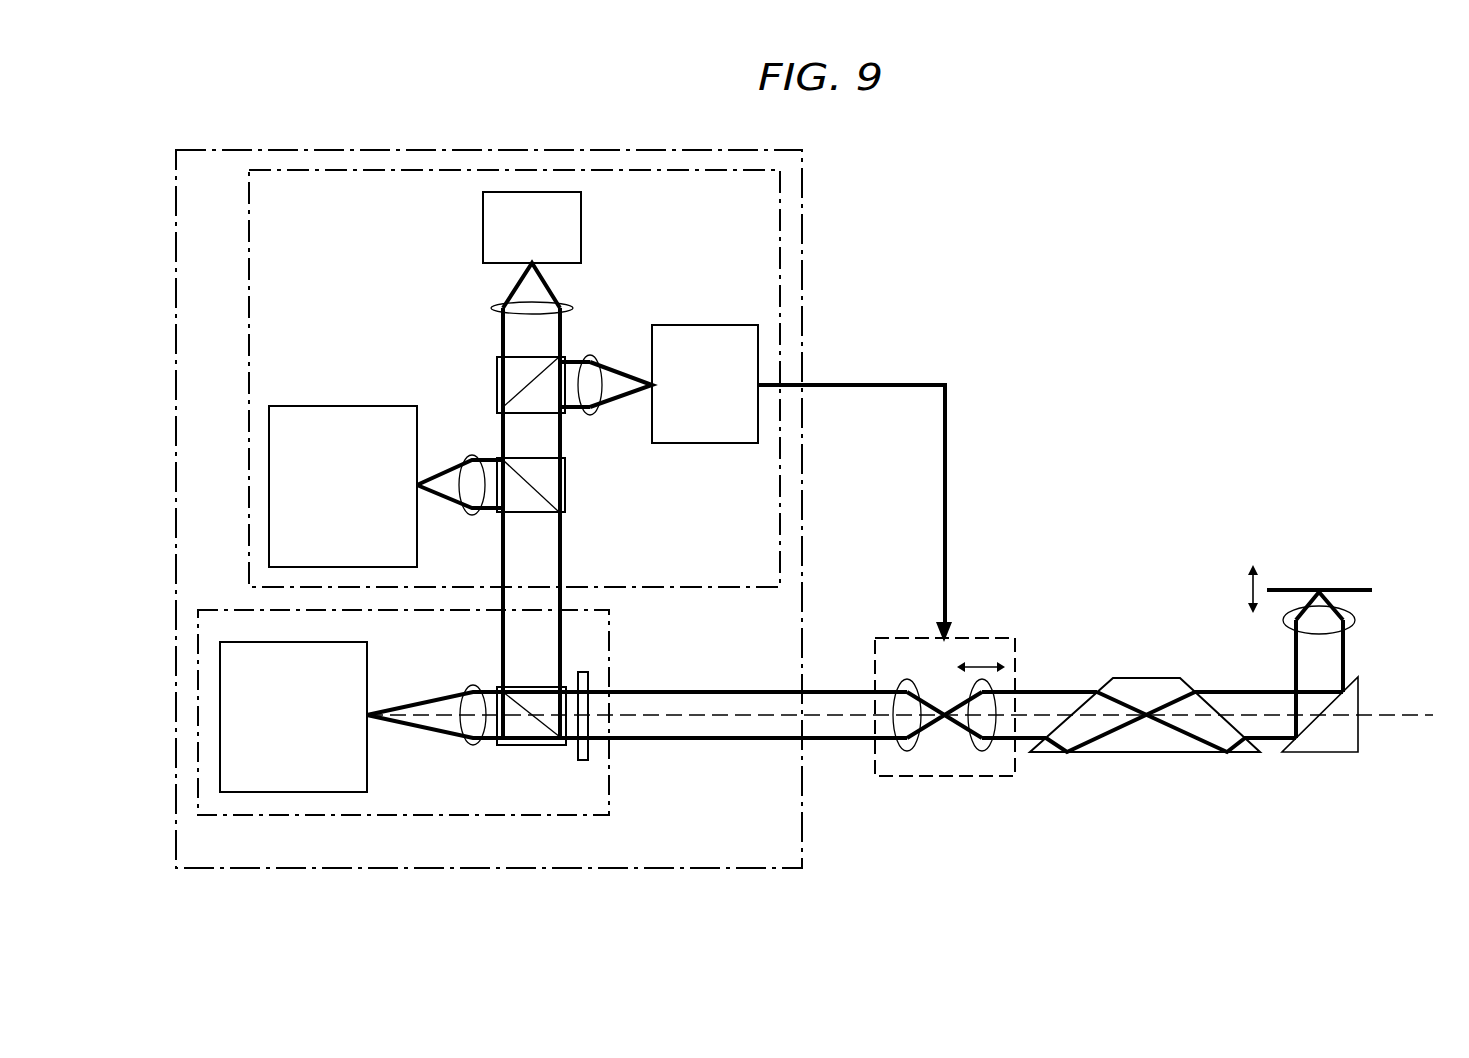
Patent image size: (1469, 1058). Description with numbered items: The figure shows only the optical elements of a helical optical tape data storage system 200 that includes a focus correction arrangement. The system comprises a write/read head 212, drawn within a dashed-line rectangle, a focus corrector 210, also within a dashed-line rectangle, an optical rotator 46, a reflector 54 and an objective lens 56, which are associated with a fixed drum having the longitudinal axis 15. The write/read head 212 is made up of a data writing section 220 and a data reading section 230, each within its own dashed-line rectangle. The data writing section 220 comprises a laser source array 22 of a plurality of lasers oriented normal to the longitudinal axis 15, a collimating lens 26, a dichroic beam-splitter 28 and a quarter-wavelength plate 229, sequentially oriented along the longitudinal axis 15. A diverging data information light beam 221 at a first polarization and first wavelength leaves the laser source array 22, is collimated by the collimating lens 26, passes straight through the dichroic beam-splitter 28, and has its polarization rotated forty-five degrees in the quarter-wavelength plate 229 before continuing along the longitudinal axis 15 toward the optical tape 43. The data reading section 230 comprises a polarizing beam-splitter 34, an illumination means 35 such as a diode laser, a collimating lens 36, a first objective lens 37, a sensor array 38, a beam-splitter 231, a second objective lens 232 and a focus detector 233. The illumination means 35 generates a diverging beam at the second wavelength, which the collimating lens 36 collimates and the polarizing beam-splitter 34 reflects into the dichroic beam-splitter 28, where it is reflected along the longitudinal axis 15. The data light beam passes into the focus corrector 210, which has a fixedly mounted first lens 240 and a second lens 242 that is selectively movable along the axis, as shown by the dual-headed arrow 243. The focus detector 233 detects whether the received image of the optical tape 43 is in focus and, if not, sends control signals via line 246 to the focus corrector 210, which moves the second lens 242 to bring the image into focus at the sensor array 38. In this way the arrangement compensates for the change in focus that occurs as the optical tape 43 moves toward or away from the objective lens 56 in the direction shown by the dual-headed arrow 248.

The helical optical tape data storage system 200 is at (1145, 285).
The write/read head 212 is at (340, 150).
The data reading section 230 is at (780, 220).
The data writing section 220 is at (197, 693).
The focus corrector 210 is at (905, 777).
The longitudinal axis 15 is at (1415, 713).
The sensor array 38 is at (483, 226).
The first objective lens 37 is at (492, 308).
The beam-splitter 231 is at (497, 377).
The second objective lens 232 is at (592, 413).
The focus detector 233 is at (680, 325).
The illumination means 35 is at (383, 406).
The collimating lens 36 is at (472, 460).
The polarizing beam-splitter 34 is at (563, 485).
The dichroic beam-splitter 28 is at (532, 687).
The laser source array 22 is at (367, 763).
The data information light beam 221 is at (430, 732).
The collimating lens 26 is at (470, 733).
The quarter-wavelength plate 229 is at (588, 750).
The first lens 240 is at (905, 683).
The second lens 242 is at (982, 743).
The dual-headed arrow 243 is at (980, 667).
The line 246 is at (857, 383).
The optical rotator 46 is at (1152, 743).
The reflector 54 is at (1333, 742).
The objective lens 56 is at (1357, 620).
The optical tape 43 is at (1360, 588).
The dual-headed arrow 248 is at (1248, 590).